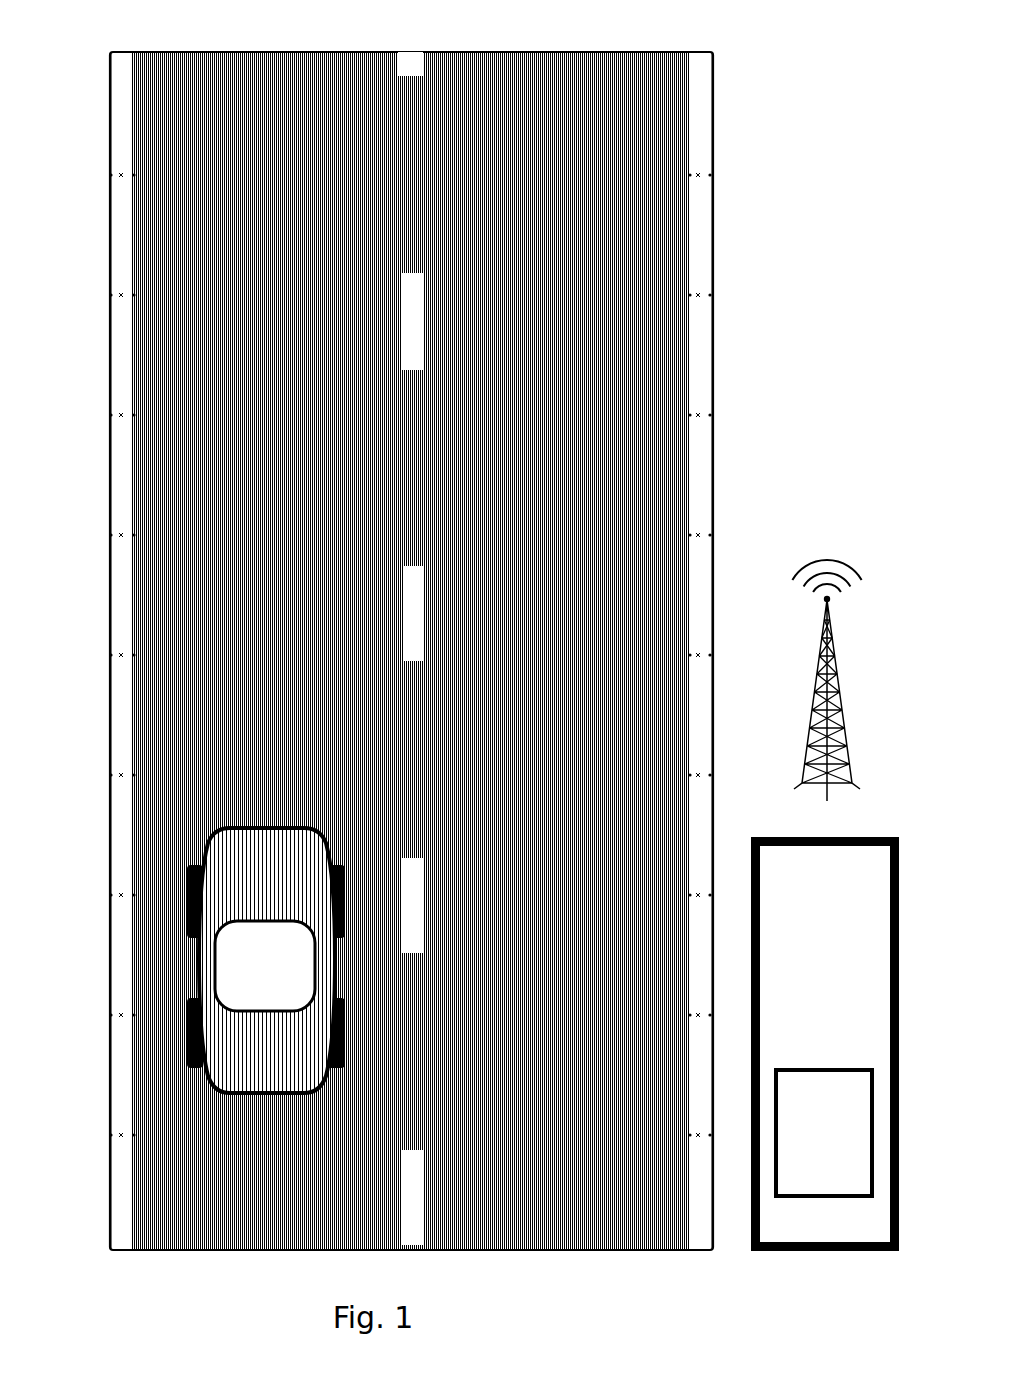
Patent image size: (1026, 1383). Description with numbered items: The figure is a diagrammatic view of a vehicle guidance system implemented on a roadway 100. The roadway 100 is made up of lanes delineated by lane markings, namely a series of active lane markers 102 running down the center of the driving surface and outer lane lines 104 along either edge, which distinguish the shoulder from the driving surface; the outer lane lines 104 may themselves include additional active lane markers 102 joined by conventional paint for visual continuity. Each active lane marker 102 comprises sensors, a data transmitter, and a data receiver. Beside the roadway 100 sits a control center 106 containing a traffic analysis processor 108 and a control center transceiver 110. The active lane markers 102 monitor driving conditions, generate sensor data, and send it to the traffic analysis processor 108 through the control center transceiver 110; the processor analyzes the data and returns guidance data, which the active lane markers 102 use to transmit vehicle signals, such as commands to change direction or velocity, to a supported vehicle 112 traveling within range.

The roadway 100 is at (185, 105).
The active lane markers 102 is at (112, 1159).
The outer lane lines 104 is at (722, 69).
The control center 106 is at (800, 971).
The traffic analysis processor 108 is at (800, 1144).
The control center transceiver 110 is at (832, 670).
The supported vehicles 112 is at (267, 1040).